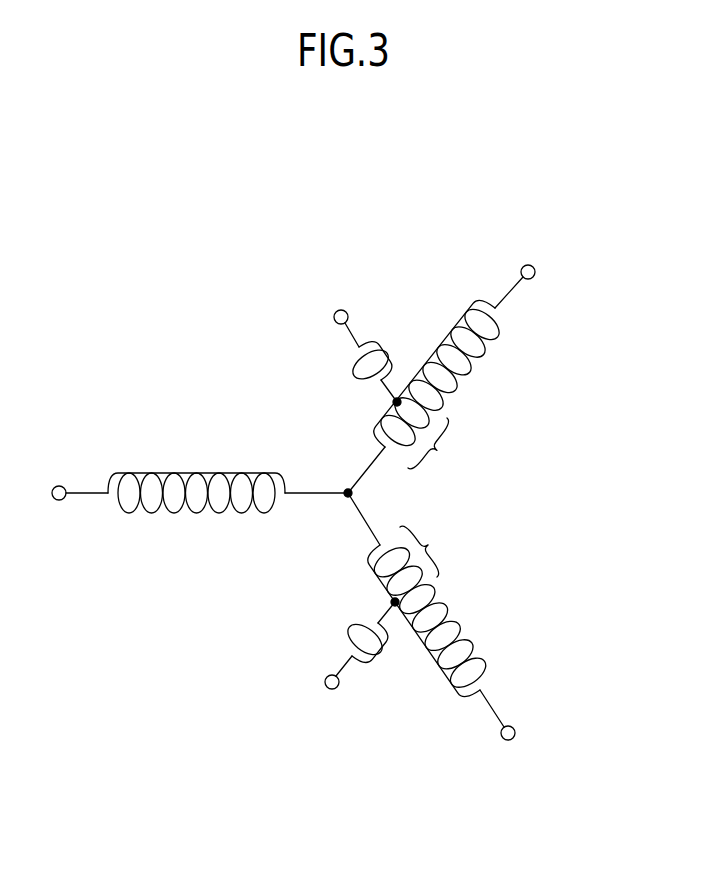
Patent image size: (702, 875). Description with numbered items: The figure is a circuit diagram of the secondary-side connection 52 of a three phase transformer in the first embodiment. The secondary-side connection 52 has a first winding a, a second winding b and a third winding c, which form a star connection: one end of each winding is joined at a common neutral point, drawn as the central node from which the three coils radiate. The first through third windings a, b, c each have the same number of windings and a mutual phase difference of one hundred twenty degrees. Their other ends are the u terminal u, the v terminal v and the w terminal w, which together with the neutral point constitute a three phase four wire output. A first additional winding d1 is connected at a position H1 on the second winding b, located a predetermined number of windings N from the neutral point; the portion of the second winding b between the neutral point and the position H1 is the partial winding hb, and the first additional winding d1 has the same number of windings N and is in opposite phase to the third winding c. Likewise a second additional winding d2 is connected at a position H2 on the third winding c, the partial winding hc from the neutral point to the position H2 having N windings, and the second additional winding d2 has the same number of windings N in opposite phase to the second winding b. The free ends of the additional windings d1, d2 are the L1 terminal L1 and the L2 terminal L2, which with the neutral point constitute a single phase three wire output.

The secondary-side connection 52 is at (131, 296).
The u terminal u is at (59, 486).
The v terminal v is at (515, 733).
The w terminal w is at (535, 272).
The first winding a is at (196, 509).
The second winding b is at (436, 634).
The third winding c is at (448, 364).
The first additional winding d1 is at (357, 639).
The second additional winding d2 is at (359, 362).
The position H1 is at (395, 602).
The position H2 is at (397, 402).
The L1 terminal L1 is at (332, 689).
The L2 terminal L2 is at (340, 310).
The partial winding hb is at (431, 551).
The partial winding hc is at (440, 444).